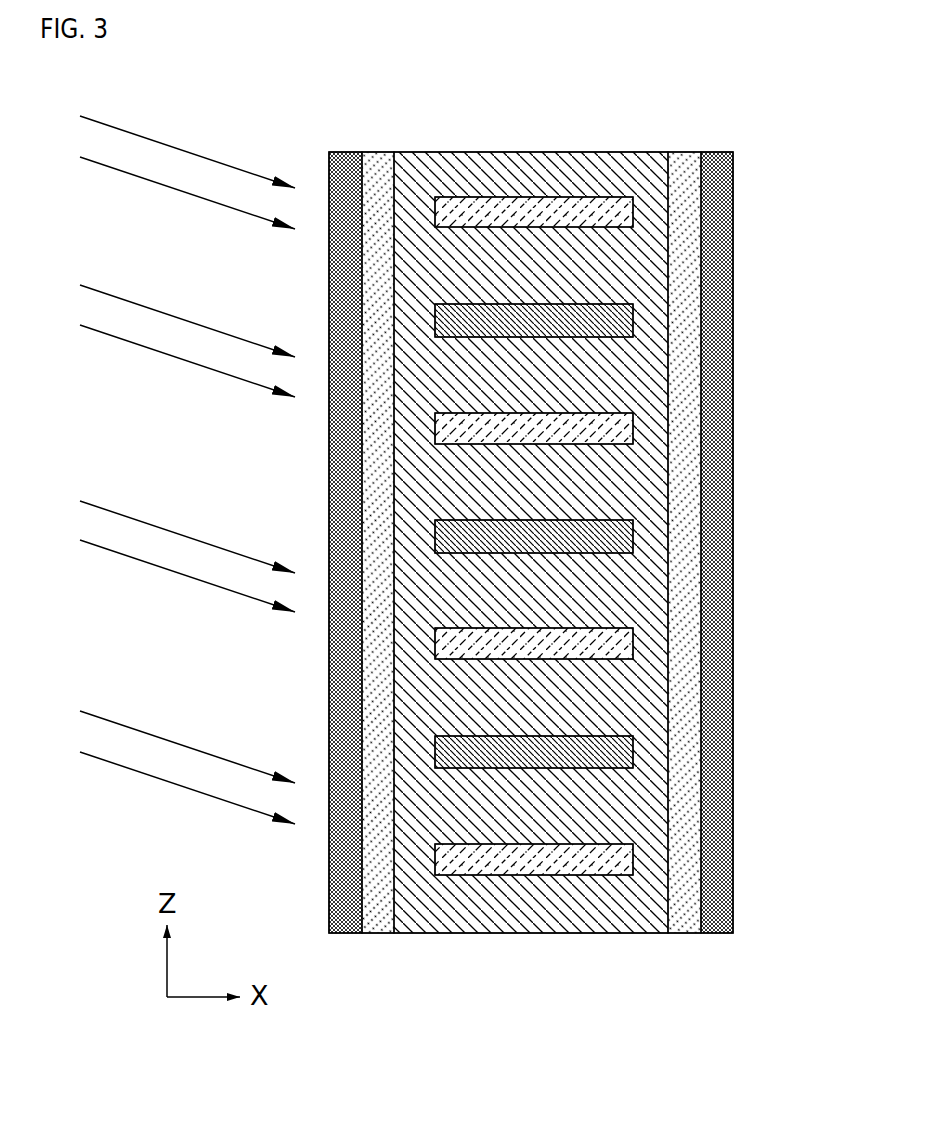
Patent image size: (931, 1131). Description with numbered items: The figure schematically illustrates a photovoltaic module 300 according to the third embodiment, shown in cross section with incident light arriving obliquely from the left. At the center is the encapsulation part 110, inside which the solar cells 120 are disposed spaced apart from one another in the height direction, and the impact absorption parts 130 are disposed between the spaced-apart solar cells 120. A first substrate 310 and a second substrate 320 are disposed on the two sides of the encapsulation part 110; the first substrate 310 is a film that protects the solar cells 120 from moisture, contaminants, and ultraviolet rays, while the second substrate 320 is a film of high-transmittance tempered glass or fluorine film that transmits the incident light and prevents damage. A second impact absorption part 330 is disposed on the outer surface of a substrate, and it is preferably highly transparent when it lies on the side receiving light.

The photovoltaic module 300 is at (308, 119).
The first substrate 310 is at (377, 727).
The encapsulation part 110 is at (643, 487).
The solar cells 120 is at (627, 322).
The impact absorption parts 130 is at (628, 212).
The second substrate 320 is at (690, 625).
The second impact absorption part 330 is at (728, 723).